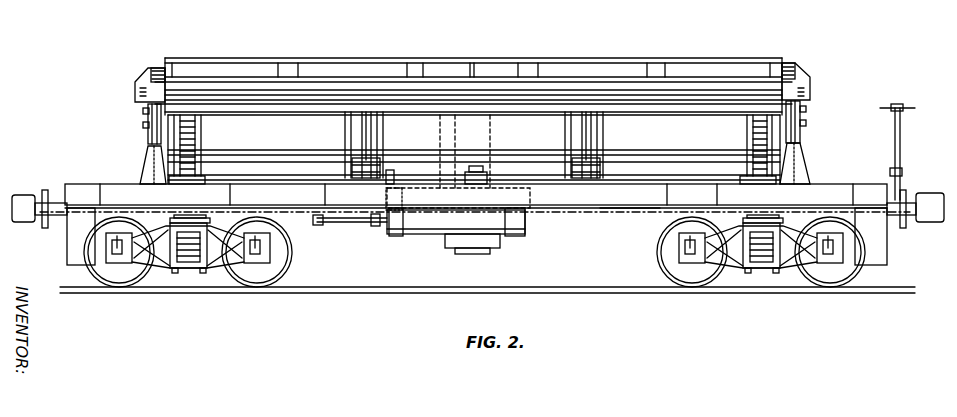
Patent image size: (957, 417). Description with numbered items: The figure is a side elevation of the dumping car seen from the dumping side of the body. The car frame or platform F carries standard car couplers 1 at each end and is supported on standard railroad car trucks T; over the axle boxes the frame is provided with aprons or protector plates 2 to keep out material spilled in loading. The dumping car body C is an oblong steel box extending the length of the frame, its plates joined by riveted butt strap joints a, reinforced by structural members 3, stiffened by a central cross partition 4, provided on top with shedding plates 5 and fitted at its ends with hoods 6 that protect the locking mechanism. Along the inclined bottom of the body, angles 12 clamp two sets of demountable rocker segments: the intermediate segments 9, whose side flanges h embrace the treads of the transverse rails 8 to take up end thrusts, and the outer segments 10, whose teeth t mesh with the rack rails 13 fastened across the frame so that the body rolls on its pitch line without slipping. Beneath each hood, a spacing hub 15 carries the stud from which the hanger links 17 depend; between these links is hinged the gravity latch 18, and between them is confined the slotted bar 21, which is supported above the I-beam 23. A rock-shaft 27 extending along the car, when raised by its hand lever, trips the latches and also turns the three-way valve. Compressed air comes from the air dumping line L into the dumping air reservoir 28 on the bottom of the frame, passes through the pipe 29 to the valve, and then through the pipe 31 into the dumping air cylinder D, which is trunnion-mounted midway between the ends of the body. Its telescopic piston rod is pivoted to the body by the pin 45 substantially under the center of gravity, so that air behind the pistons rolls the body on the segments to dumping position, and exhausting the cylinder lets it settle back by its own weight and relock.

The car coupler 1 is at (23, 196).
The apron or protector plate 2 is at (146, 199).
The structural member 3 is at (660, 165).
The central cross partition 4 is at (471, 63).
The shedding plate 5 is at (155, 65).
The hood 6 is at (136, 82).
The rocker supporting cross rail 8 is at (365, 179).
The rocker segment 9 is at (372, 129).
The rocker segment 10 is at (198, 146).
The angle 12 is at (384, 135).
The rack rail 13 is at (200, 181).
The spacing hub 15 is at (806, 109).
The hanger link 17 is at (147, 125).
The gravity latch or lock bar 18 is at (143, 111).
The longitudinally slotted bar 21 is at (806, 130).
The structural member or I-beam 23 is at (148, 145).
The rock-shaft 27 is at (386, 180).
The dumping air reservoir 28 is at (392, 237).
The pipe 29 is at (445, 186).
The pipe 31 is at (422, 236).
The pin 45 is at (376, 226).
The butt strap joint a is at (414, 70).
The dumping car body C is at (567, 68).
The dumping air cylinder D is at (475, 250).
The car frame or platform F is at (618, 204).
The side flange h is at (345, 126).
The tooth t is at (190, 141).
The air dumping line L is at (340, 224).
The railroad car truck T is at (192, 274).